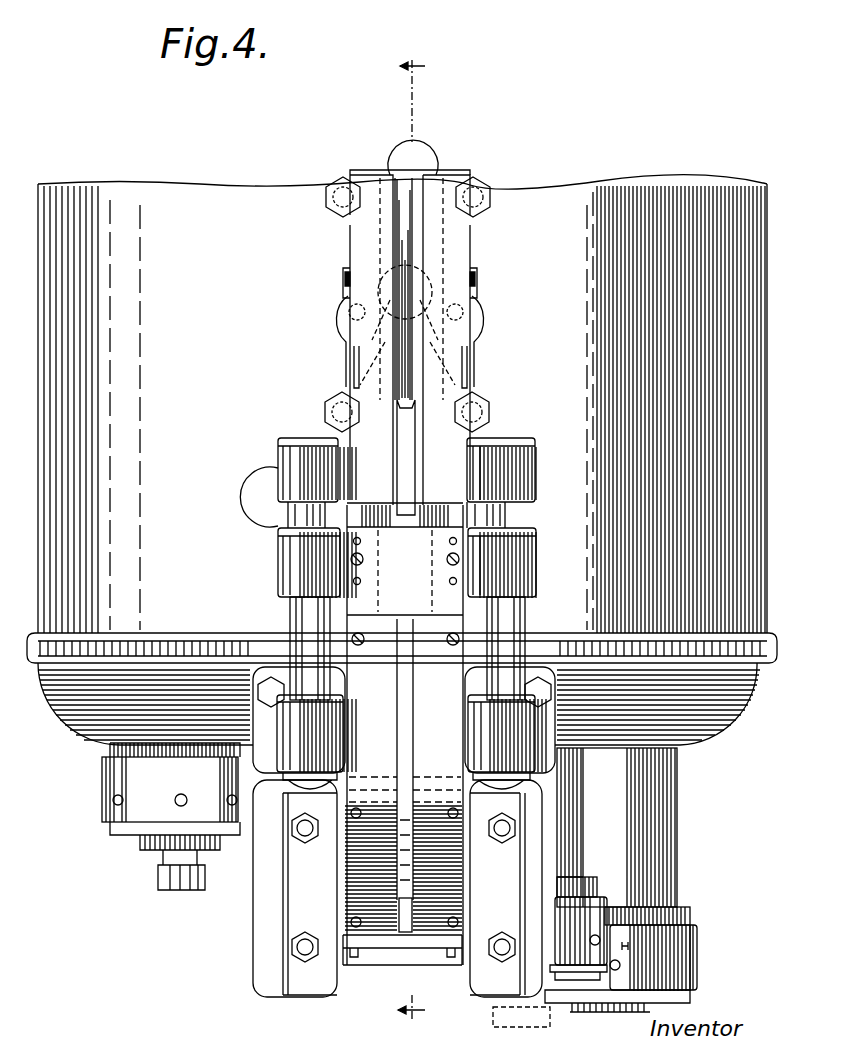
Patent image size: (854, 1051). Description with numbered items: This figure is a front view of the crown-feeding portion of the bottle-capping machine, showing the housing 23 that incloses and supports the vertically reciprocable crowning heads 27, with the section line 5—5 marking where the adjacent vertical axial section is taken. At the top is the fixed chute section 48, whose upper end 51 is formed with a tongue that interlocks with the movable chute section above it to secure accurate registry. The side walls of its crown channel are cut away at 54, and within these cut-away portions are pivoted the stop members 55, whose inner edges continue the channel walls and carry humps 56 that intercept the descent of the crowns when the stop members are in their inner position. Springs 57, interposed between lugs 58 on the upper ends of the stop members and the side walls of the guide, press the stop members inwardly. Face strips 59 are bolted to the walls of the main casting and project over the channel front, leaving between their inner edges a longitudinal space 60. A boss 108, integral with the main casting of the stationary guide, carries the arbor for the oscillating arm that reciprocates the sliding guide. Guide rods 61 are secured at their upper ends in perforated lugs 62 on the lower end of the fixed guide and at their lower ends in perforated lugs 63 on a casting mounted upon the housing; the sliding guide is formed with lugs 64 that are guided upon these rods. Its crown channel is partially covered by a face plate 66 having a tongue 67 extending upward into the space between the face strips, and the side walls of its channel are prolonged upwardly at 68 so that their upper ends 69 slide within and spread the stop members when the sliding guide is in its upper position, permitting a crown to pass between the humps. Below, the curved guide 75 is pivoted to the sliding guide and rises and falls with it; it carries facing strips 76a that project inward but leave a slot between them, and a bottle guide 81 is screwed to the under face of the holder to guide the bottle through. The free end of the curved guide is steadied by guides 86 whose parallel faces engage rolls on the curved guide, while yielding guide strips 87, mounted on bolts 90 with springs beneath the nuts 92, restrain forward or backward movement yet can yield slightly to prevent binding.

The section line 5— 5 is at (408, 540).
The housing 23 is at (76, 720).
The crowning head 27 is at (672, 792).
The fixed chute section 48 is at (372, 170).
The upper end of fixed section 51 is at (430, 150).
The cut-away portions 54 is at (462, 308).
The stop member 55 is at (482, 320).
The hump 56 is at (460, 343).
The spring 57 is at (478, 280).
The lug 58 is at (476, 272).
The face strip 59 is at (470, 228).
The longitudinal space 60 is at (410, 205).
The guide rod 61 is at (526, 612).
The perforated lug 62 is at (536, 470).
The perforated lug 63 is at (544, 704).
The lug 64 is at (536, 556).
The face plate 66 is at (405, 560).
The tongue 67 is at (406, 518).
The side wall extension 68 is at (478, 432).
The upper end of side wall extension 69 is at (465, 385).
The curved guide 75 is at (344, 650).
The facing strip 76a is at (380, 898).
The bottle guide 81 is at (430, 960).
The guide 86 is at (508, 828).
The yielding guide strip 87 is at (478, 985).
The bolt 90 is at (510, 940).
The nut 92 is at (502, 928).
The boss 108 is at (250, 492).